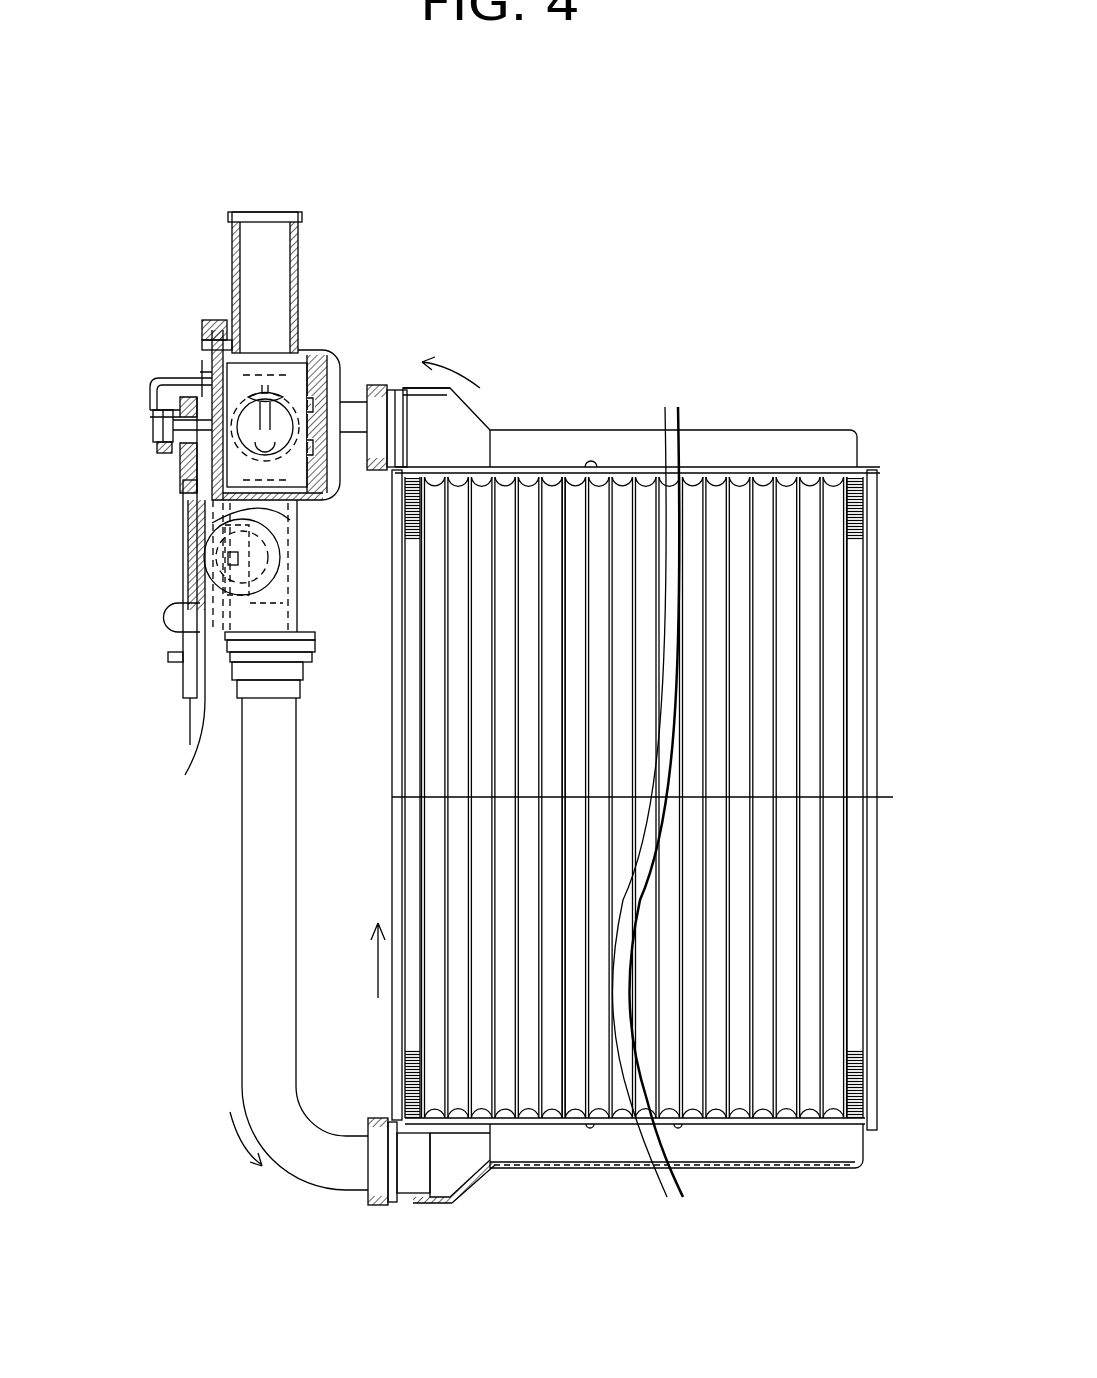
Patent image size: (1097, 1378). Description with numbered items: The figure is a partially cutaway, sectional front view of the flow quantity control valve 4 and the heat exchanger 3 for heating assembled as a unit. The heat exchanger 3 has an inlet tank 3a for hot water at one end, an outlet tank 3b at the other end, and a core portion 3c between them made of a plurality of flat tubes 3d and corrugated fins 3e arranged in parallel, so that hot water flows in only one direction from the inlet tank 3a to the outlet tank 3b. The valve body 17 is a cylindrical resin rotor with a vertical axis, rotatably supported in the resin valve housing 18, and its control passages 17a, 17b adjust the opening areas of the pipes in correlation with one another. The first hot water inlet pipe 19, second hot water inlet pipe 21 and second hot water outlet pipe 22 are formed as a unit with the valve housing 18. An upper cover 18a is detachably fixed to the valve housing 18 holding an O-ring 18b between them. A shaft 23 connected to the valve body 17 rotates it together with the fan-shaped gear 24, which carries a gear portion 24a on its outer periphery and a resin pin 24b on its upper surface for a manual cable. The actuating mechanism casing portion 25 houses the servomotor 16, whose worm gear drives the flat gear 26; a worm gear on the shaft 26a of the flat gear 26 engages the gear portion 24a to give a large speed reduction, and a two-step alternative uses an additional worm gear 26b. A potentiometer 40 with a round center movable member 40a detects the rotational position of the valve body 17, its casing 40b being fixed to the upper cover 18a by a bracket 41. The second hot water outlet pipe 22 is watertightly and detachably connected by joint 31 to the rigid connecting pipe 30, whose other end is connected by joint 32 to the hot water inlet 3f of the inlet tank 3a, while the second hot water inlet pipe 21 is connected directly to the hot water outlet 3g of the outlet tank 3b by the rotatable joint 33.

The heat exchanger 3 is at (530, 890).
The inlet tank 3a is at (568, 1147).
The outlet tank 3b is at (300, 657).
The core portion 3c is at (460, 937).
The flat tubes 3d is at (450, 1033).
The corrugated fins 3e is at (403, 1067).
The hot water inlet 3f is at (447, 1167).
The hot water outlet 3g is at (433, 437).
The flow quantity control valve 4 is at (193, 342).
The servomotor 16 is at (260, 533).
The valve body 17 is at (283, 398).
The control passage 17a is at (266, 388).
The control passage 17b is at (265, 388).
The valve housing 18 is at (320, 385).
The upper cover 18a is at (205, 340).
The O-ring 18b is at (228, 350).
The first hot water inlet pipe 19 is at (262, 348).
The second hot water inlet pipe 21 is at (376, 415).
The second hot water outlet pipe 22 is at (300, 553).
The shaft 23 is at (207, 367).
The fan-shaped gear 24 is at (185, 680).
The gear portion 24a is at (190, 705).
The pin 24b is at (168, 657).
The actuating mechanism casing portion 25 is at (237, 698).
The flat gear 26 is at (263, 613).
The shaft of flat gear 26a is at (210, 700).
The worm gear 26b is at (200, 608).
The connecting pipe 30 is at (270, 977).
The joint 31 is at (643, 430).
The joint 32 is at (380, 1210).
The joint 33 is at (385, 390).
The potentiometer 40 is at (145, 410).
The center movable member 40a is at (162, 428).
The casing 40b is at (150, 400).
The bracket 41 is at (195, 372).